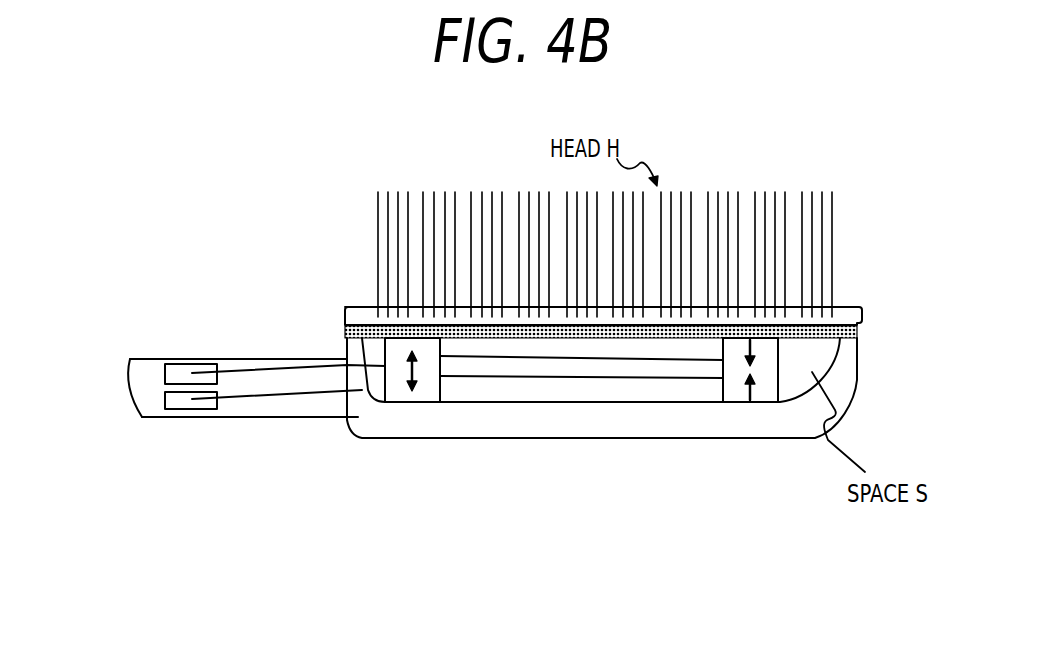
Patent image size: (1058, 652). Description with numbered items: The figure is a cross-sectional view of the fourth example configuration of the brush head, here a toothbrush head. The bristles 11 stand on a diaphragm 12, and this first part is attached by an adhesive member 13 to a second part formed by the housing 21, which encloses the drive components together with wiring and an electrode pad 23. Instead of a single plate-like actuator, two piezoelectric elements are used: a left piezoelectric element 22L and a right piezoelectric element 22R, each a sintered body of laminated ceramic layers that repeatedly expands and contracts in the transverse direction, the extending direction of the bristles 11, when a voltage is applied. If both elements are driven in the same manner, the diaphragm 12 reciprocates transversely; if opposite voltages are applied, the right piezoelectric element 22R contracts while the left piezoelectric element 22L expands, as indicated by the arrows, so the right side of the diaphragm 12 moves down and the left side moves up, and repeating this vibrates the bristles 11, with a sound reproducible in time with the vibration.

The bristles 11 is at (442, 236).
The diaphragm 12 is at (363, 315).
The adhesive member 13 is at (347, 333).
The housing 21 is at (412, 417).
The left piezoelectric element 22L is at (427, 377).
The right piezoelectric element 22R is at (743, 363).
The electrode pad 23 is at (172, 403).